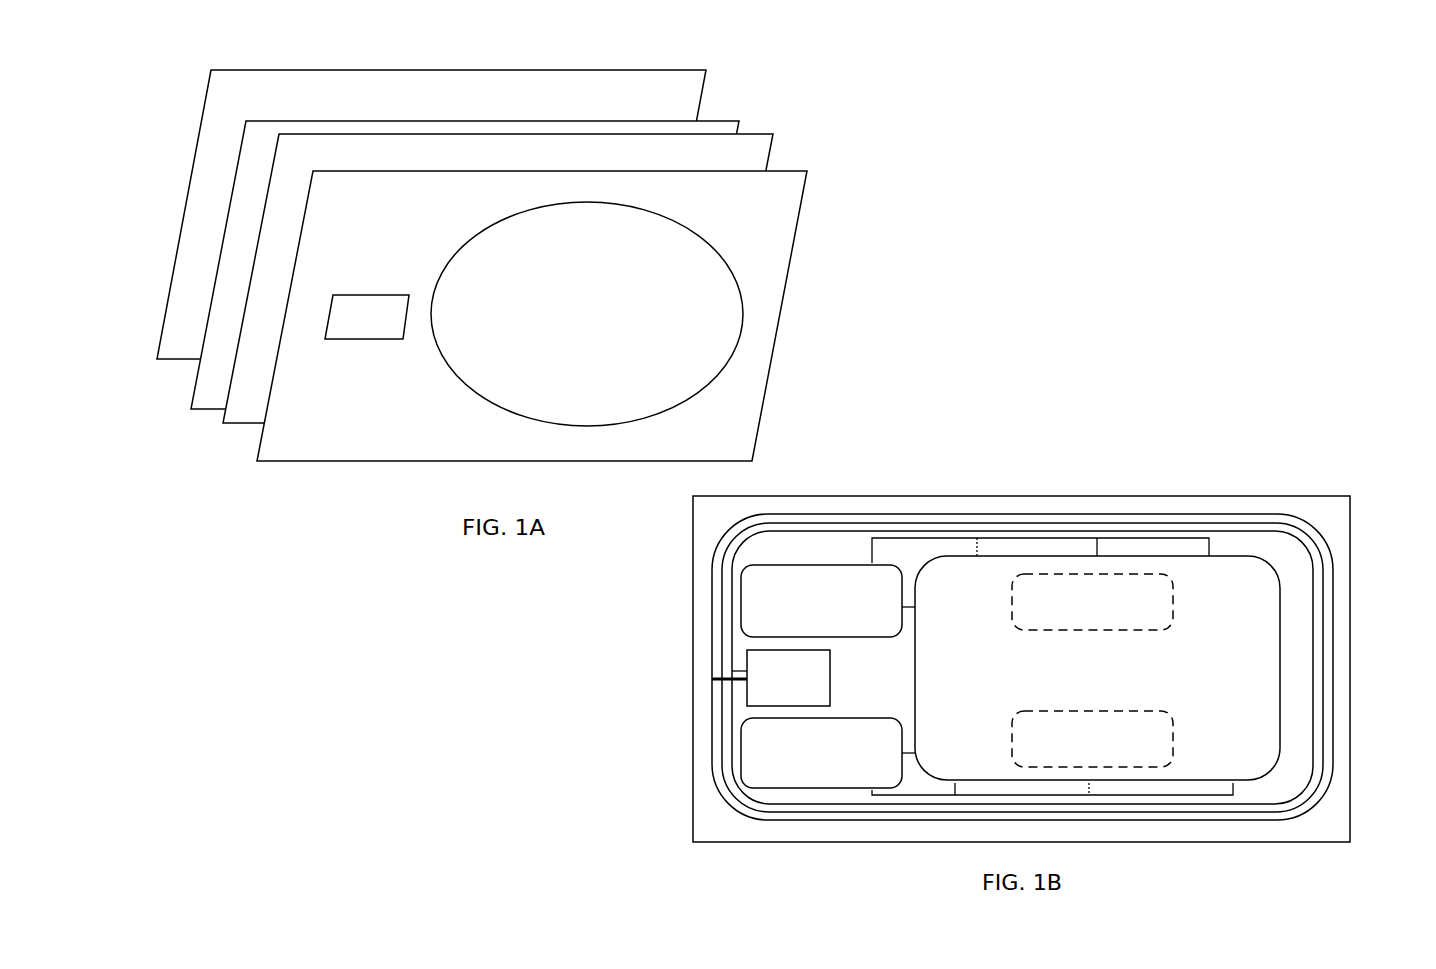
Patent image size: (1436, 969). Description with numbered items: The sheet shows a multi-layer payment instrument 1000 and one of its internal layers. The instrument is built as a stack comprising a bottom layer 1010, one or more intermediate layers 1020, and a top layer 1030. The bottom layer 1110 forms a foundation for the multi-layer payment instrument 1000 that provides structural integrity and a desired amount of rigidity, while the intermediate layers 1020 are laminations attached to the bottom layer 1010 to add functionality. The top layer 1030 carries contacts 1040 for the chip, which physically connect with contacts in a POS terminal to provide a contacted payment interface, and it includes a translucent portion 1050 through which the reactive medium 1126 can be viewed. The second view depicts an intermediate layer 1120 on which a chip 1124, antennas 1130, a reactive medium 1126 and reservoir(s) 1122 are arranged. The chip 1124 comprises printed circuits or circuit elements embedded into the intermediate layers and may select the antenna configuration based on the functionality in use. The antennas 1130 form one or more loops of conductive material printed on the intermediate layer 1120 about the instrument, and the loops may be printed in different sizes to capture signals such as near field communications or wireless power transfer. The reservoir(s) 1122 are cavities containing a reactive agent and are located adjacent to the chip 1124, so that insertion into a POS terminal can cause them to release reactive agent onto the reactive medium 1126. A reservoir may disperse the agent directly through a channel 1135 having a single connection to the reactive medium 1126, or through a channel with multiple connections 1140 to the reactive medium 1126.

In FIG. 1A, the multi-layer payment instrument 1000 is at (579, 275).
In FIG. 1A, the bottom layer 1010 is at (675, 93).
In FIG. 1A, the intermediate layers 1020 is at (713, 118).
In FIG. 1A, the top layer 1030 is at (787, 190).
In FIG. 1A, the contacts 1040 is at (367, 323).
In FIG. 1A, the translucent portion 1050 is at (735, 353).
In FIG. 1B, the bottom layer 1110 is at (1004, 616).
In FIG. 1B, the intermediate layer 1120 is at (1332, 513).
In FIG. 1B, the reservoir(s) 1122 is at (957, 676).
In FIG. 1B, the chip 1124 is at (771, 678).
In FIG. 1B, the reactive medium 1126 is at (1097, 668).
In FIG. 1B, the antennas 1130 is at (728, 802).
In FIG. 1B, the channel 1135 is at (908, 753).
In FIG. 1B, the channel with multiple connections 1140 is at (872, 552).